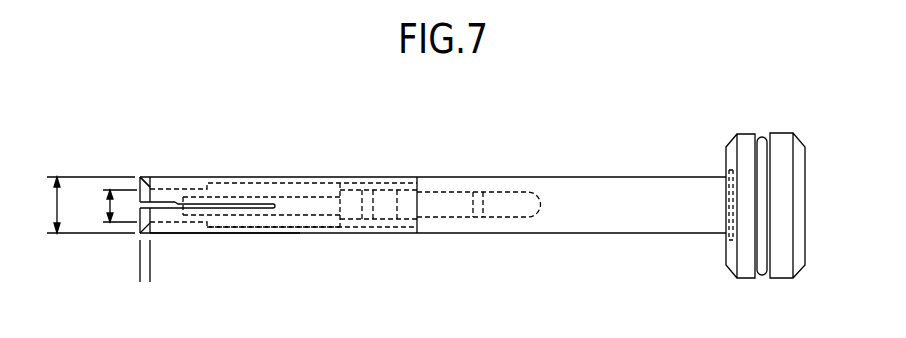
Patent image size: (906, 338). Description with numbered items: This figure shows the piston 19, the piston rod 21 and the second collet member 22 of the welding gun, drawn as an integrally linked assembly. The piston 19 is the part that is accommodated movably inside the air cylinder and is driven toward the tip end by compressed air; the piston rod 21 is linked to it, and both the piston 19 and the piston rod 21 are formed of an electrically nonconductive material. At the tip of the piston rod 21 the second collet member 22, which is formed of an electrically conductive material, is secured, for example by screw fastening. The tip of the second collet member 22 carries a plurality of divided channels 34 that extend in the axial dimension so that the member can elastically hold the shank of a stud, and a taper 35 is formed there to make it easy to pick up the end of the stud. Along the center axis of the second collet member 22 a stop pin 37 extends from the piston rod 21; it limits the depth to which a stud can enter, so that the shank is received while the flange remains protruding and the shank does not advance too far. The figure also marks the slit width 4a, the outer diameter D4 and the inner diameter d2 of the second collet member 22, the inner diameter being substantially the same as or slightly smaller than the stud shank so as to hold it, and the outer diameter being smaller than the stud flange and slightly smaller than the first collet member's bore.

The piston 19 is at (747, 133).
The piston rod 21 is at (628, 222).
The second collet member 22 is at (223, 234).
The divided channels 34 is at (178, 209).
The taper 35 is at (140, 182).
The stop pin 37 is at (313, 237).
The slit width 4a is at (175, 273).
The outer diameter D4 is at (76, 205).
The inner diameter d2 is at (106, 208).